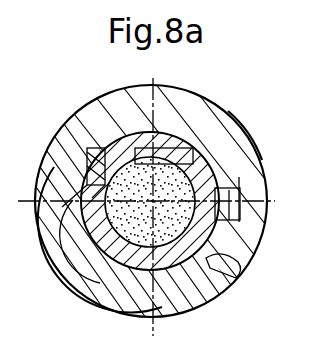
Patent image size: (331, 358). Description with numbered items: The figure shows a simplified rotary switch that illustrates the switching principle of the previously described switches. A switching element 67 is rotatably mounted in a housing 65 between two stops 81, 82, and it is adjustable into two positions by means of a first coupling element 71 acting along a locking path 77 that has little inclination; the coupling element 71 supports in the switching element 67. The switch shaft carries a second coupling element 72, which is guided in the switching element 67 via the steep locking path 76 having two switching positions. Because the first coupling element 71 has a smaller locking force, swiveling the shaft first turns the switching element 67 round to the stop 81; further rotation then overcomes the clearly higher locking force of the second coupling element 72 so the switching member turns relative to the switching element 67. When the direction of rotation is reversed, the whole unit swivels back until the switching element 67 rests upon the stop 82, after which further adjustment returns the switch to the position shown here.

The housing 65 is at (100, 107).
The switching element 67 is at (86, 292).
The first coupling element 71 is at (53, 252).
The second coupling element 72 is at (198, 110).
The steep locking path 76 is at (246, 121).
The locking path 77 is at (70, 122).
The stop 81 is at (238, 276).
The stop 82 is at (263, 188).